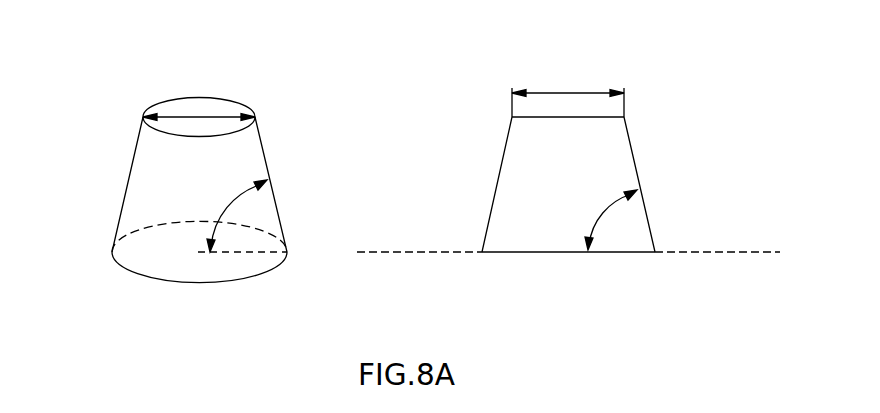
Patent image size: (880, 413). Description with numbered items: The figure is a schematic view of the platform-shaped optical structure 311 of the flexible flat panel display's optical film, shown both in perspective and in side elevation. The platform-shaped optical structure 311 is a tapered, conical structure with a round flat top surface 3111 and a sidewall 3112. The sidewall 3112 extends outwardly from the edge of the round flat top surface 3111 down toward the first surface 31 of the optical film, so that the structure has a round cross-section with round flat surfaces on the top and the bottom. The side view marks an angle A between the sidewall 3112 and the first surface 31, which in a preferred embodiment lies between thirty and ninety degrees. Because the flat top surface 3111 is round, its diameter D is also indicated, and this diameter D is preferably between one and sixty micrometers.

The first surface 31 is at (720, 252).
The platform-shaped optical structure 311 is at (133, 163).
The flat top surface 3111 is at (167, 101).
The sidewall 3112 is at (268, 164).
The diameter D is at (201, 117).
The angle A is at (422, 216).